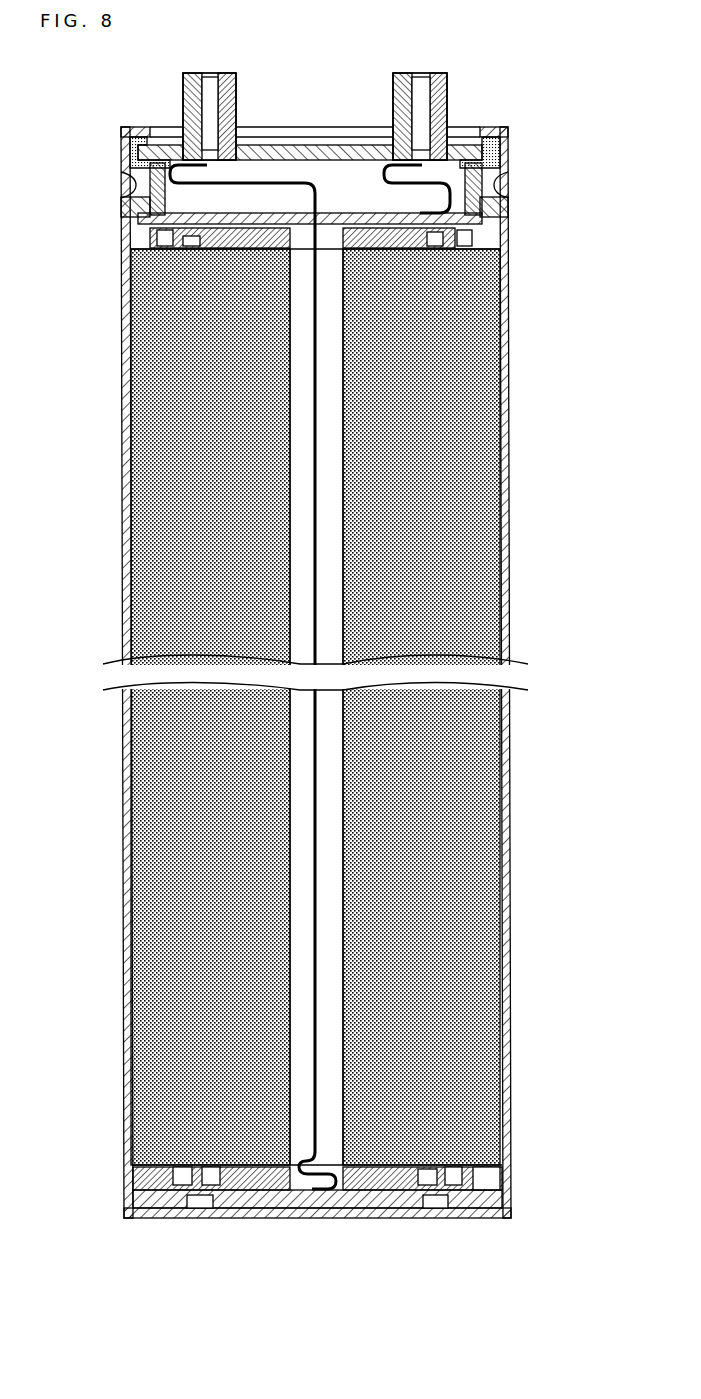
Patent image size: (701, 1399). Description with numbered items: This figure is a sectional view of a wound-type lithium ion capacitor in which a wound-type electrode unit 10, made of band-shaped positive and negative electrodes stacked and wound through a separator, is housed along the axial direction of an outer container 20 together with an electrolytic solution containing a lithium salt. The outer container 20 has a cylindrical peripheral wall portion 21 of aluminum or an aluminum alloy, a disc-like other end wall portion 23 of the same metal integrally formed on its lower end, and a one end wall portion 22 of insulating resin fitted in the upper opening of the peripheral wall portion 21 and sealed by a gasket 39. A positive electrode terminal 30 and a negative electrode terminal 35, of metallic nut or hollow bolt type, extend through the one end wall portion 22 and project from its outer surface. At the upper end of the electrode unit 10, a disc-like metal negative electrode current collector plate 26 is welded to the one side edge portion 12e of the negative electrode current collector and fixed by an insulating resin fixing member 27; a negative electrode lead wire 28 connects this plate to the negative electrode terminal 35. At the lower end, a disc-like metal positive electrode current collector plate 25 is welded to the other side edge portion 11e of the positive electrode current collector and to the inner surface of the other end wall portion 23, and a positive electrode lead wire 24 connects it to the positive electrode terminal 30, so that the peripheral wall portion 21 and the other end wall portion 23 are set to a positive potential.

The wound-type electrode unit 10 is at (145, 433).
The other side edge portion of the positive electrode current collector 11e is at (155, 1180).
The one side edge portion of the negative electrode current collector 12e is at (145, 238).
The outer container 20 is at (121, 538).
The peripheral wall portion 21 is at (508, 556).
The one end wall portion 22 is at (266, 143).
The other end wall portion 23 is at (434, 1216).
The positive electrode lead wire 24 is at (313, 332).
The positive electrode current collector plate 25 is at (268, 1210).
The negative electrode current collector plate 26 is at (356, 215).
The fixing member 27 is at (150, 188).
The negative electrode lead wire 28 is at (470, 190).
The positive electrode terminal 30 is at (182, 92).
The negative electrode terminal 35 is at (447, 92).
The gasket 39 is at (502, 146).